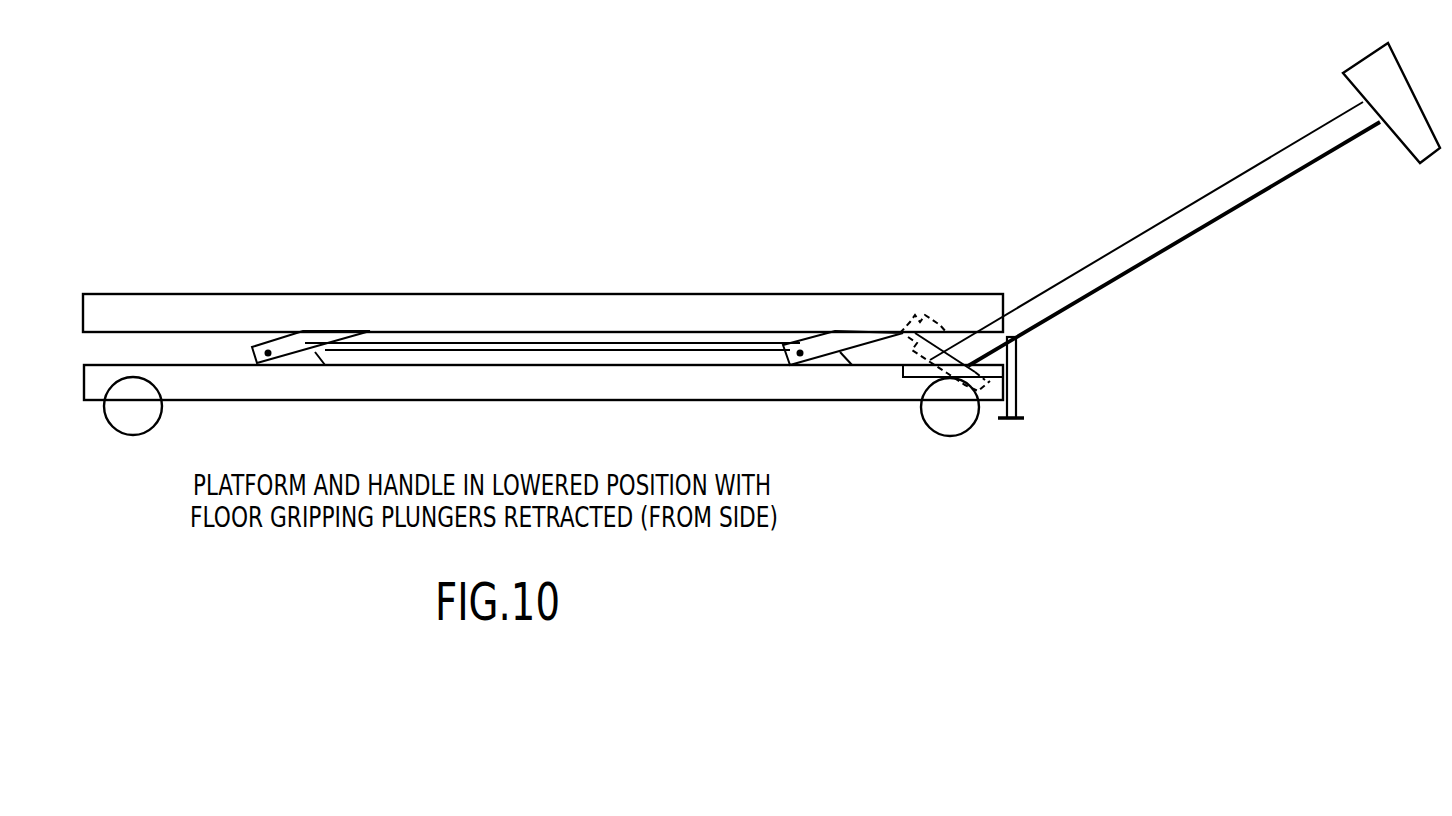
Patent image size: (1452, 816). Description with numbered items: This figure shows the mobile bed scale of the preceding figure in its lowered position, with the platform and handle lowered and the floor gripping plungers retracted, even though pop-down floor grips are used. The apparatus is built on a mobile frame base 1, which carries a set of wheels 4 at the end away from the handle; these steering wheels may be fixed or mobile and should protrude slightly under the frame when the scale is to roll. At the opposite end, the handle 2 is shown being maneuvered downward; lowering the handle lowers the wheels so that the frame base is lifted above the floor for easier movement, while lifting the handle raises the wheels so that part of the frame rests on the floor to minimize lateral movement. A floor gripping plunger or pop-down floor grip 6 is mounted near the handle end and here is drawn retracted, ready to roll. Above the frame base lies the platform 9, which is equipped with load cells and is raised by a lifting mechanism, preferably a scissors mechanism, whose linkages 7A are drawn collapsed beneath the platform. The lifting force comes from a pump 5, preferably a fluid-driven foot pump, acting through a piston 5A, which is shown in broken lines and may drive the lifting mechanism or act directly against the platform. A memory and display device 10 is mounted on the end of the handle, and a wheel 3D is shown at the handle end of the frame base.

The mobile frame base 1 is at (544, 413).
The handle 2 is at (1202, 175).
The rear wheel 3D is at (908, 431).
The steering wheels 4 is at (111, 440).
The pump 5 is at (1014, 368).
The piston 5A is at (920, 318).
The floor gripping plunger 6 is at (1020, 393).
The lifting arm 7A is at (240, 343).
The platform 9 is at (163, 287).
The memory device 10 is at (1333, 58).